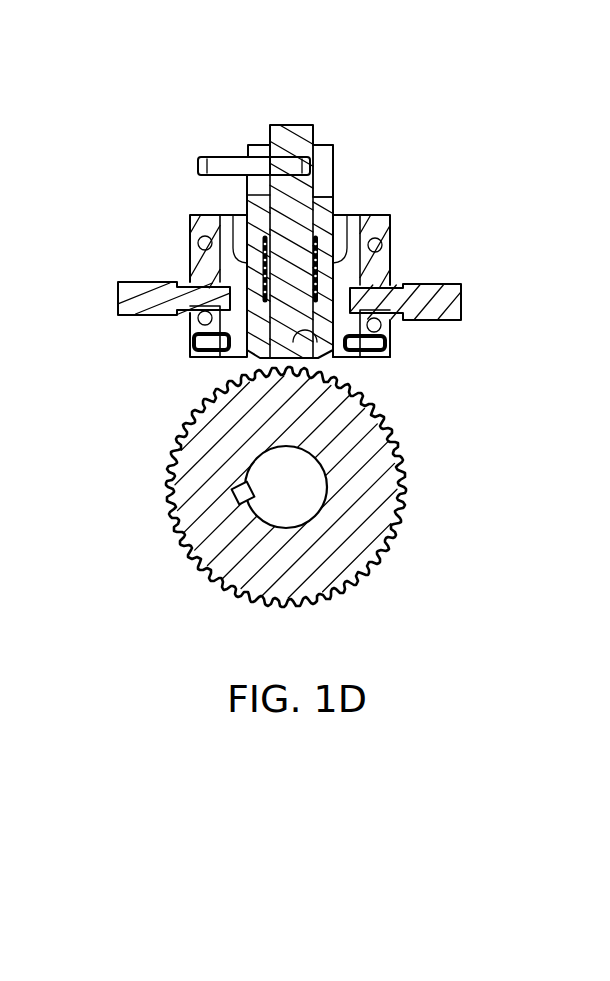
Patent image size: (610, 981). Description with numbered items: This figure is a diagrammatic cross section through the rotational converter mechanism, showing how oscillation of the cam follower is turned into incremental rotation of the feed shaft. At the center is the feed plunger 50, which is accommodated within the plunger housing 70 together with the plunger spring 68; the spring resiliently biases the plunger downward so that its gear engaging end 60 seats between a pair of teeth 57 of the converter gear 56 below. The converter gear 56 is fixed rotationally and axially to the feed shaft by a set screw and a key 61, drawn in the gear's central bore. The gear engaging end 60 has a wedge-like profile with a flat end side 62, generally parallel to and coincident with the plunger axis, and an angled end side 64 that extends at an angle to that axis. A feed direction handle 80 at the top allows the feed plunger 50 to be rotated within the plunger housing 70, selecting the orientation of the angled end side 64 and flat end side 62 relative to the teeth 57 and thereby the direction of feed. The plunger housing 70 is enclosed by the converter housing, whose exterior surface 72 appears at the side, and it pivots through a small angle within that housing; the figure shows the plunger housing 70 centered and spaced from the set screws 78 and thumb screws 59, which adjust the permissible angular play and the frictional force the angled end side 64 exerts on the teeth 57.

The feed plunger 50 is at (297, 124).
The feed direction handle 80 is at (222, 157).
The plunger housing 70 is at (333, 203).
The plunger spring 68 is at (250, 213).
The exterior surface 72 is at (392, 229).
The thumb screws 59 is at (117, 276).
The set screws 78 is at (188, 344).
The angled end side 64 is at (307, 345).
The gear engaging end 60 is at (337, 358).
The flat end side 62 is at (300, 362).
The teeth 57 is at (392, 531).
The converter gear 56 is at (338, 553).
The key 61 is at (237, 500).